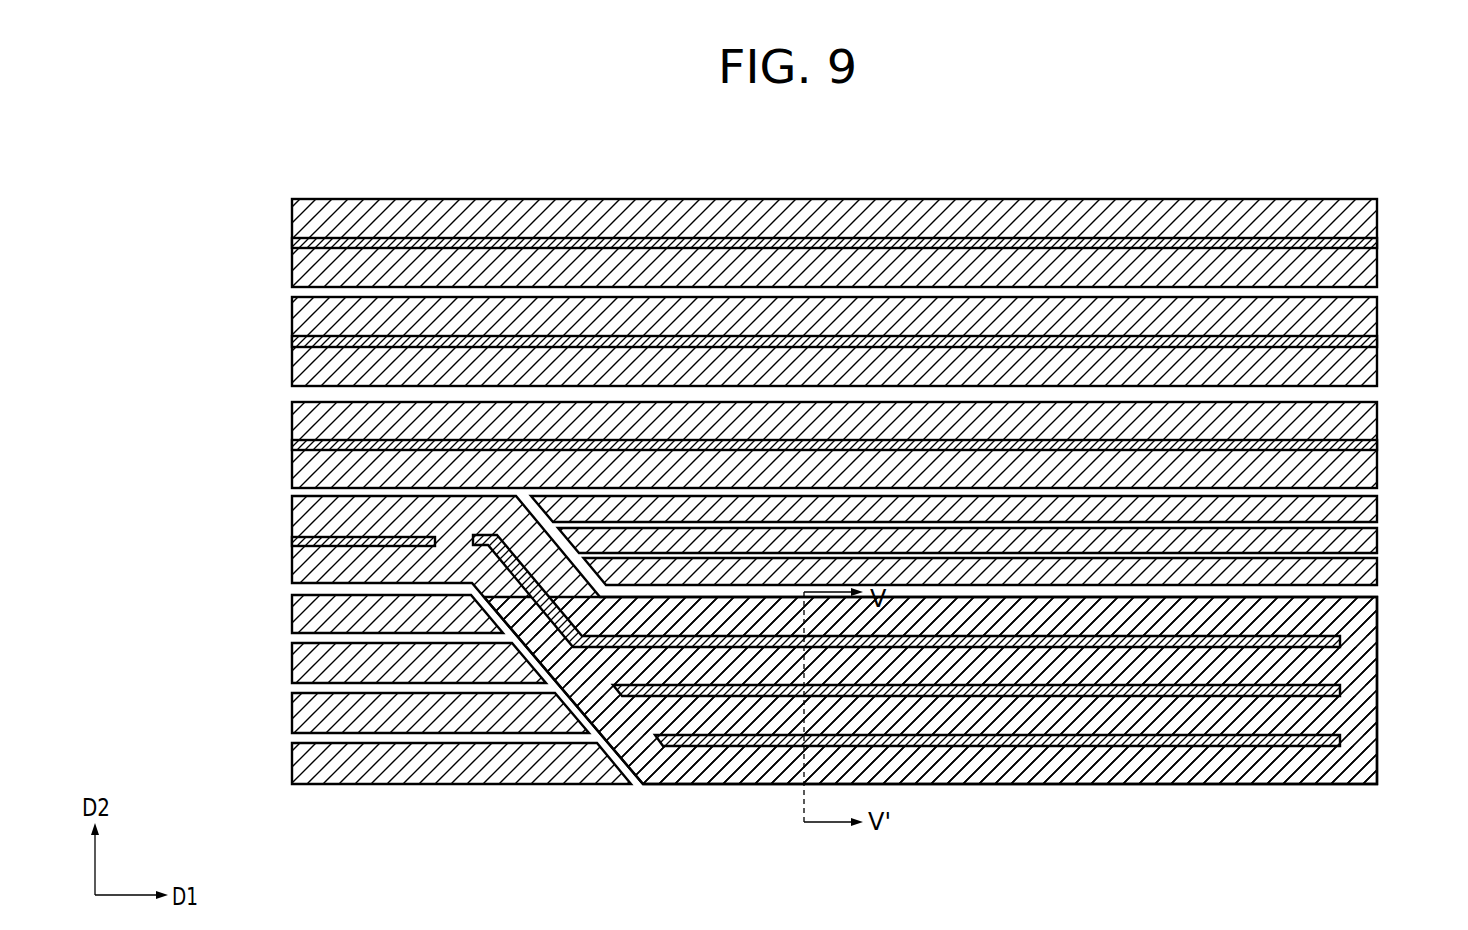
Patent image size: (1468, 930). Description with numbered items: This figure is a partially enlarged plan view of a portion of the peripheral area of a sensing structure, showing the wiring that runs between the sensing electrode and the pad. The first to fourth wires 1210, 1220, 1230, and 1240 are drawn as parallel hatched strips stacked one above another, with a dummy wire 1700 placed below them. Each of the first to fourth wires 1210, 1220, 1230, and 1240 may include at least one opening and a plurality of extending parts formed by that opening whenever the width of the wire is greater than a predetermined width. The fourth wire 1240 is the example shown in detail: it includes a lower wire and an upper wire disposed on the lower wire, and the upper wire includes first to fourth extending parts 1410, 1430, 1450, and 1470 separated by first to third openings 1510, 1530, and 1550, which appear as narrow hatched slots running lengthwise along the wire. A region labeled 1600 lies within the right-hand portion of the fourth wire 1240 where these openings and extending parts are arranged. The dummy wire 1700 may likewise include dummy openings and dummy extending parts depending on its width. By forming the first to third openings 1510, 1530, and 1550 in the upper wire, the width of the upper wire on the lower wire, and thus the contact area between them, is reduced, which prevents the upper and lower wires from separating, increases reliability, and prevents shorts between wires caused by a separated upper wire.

The first wire 1210 is at (292, 248).
The second wire 1220 is at (292, 345).
The third wire 1230 is at (292, 447).
The fourth wire 1240 is at (292, 546).
The first extending part 1410 is at (1325, 619).
The second extending part 1430 is at (1325, 668).
The third extending part 1450 is at (1325, 717).
The fourth extending part 1470 is at (1325, 763).
The first opening 1510 is at (1010, 647).
The second opening 1530 is at (1085, 696).
The third opening 1550 is at (1155, 750).
The upper insulating structure 1600 is at (1357, 770).
The dummy wire 1700 is at (290, 759).